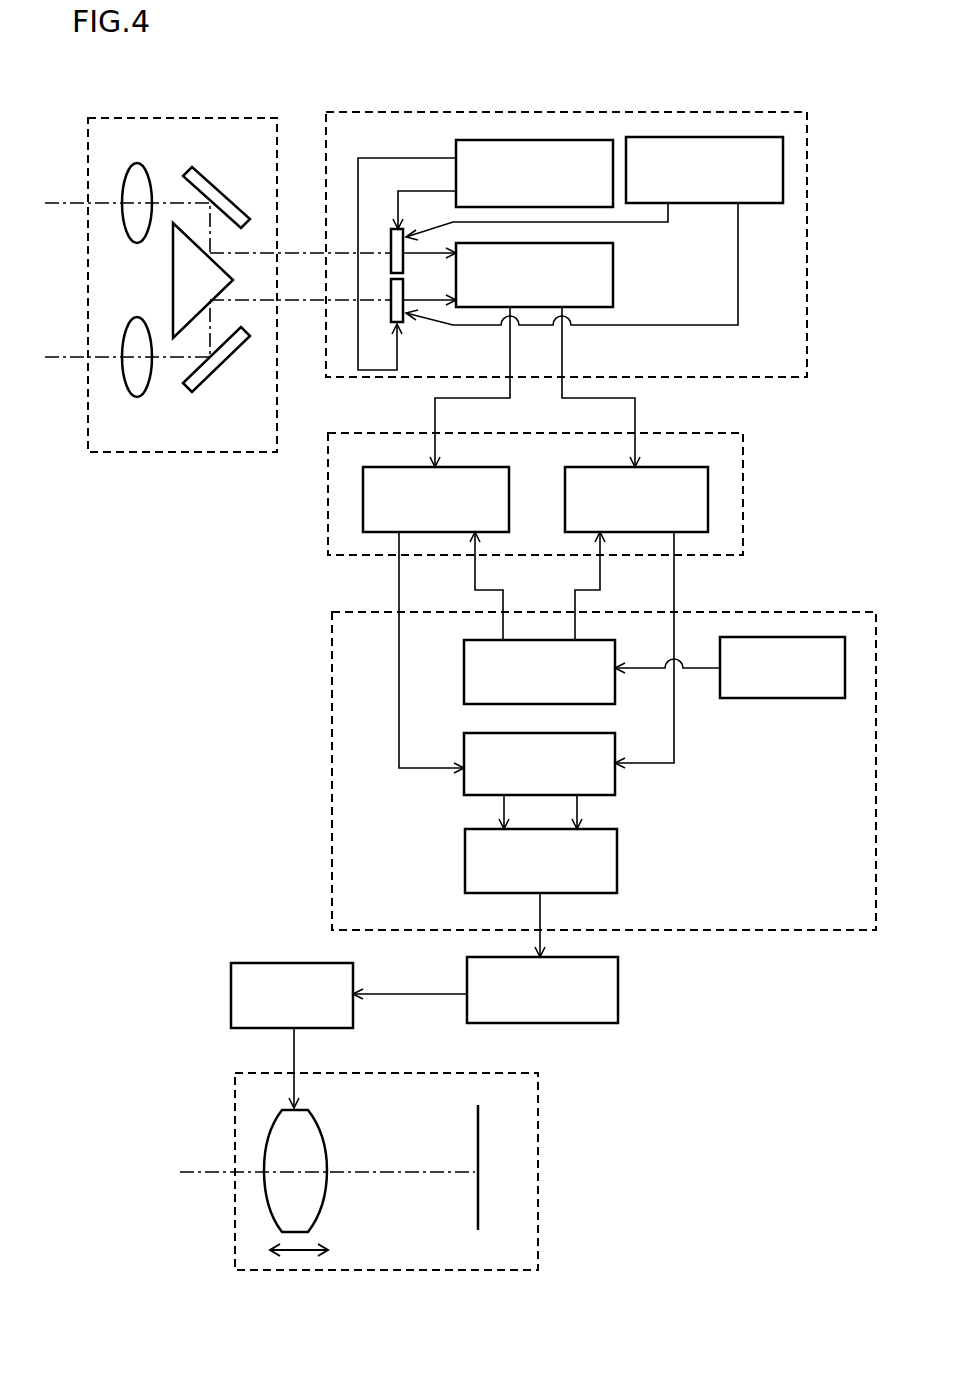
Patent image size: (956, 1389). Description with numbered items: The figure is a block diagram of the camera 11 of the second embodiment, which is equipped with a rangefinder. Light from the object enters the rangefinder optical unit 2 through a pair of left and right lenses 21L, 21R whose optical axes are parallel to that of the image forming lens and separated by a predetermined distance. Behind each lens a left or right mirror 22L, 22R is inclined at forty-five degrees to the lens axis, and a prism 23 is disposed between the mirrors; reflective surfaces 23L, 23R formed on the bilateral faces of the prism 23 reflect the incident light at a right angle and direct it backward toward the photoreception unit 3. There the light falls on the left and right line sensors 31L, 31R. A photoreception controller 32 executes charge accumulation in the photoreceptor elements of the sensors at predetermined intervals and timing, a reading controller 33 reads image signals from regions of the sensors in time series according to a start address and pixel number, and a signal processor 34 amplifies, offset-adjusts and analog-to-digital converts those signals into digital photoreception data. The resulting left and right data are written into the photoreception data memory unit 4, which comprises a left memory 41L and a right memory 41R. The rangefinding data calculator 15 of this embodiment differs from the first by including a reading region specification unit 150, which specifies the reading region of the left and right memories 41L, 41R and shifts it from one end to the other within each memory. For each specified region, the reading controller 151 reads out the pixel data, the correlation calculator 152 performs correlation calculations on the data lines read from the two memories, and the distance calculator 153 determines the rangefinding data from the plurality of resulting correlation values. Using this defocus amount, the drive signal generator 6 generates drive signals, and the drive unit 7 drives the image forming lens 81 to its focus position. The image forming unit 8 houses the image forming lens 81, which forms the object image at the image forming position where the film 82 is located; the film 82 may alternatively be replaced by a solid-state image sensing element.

The camera 11 is at (250, 728).
The rangefinder optical unit 2 is at (130, 118).
The right lens 21R is at (125, 180).
The left lens 21L is at (122, 392).
The right mirror 22R is at (228, 180).
The left mirror 22L is at (218, 380).
The prism 23 is at (177, 280).
The right reflective surface 23R is at (220, 262).
The left reflective surface 23L is at (225, 292).
The photoreception unit 3 is at (376, 112).
The right line sensor 31R is at (403, 262).
The left line sensor 31L is at (403, 322).
The photoreception controller 32 is at (525, 140).
The reading controller 33 is at (688, 137).
The signal processor 34 is at (613, 272).
The photoreception data memory unit 4 is at (328, 492).
The left memory 41L is at (445, 467).
The right memory 41R is at (630, 467).
The rangefinding data calculator 15 is at (332, 692).
The reading region specification unit 150 is at (808, 698).
The reading controller 151 is at (615, 685).
The correlation calculator 152 is at (600, 795).
The distance calculator 153 is at (617, 865).
The drive signal generator 6 is at (618, 993).
The drive unit 7 is at (231, 985).
The image forming unit 8 is at (538, 1117).
The image forming lens 81 is at (312, 1118).
The film 82 is at (476, 1122).